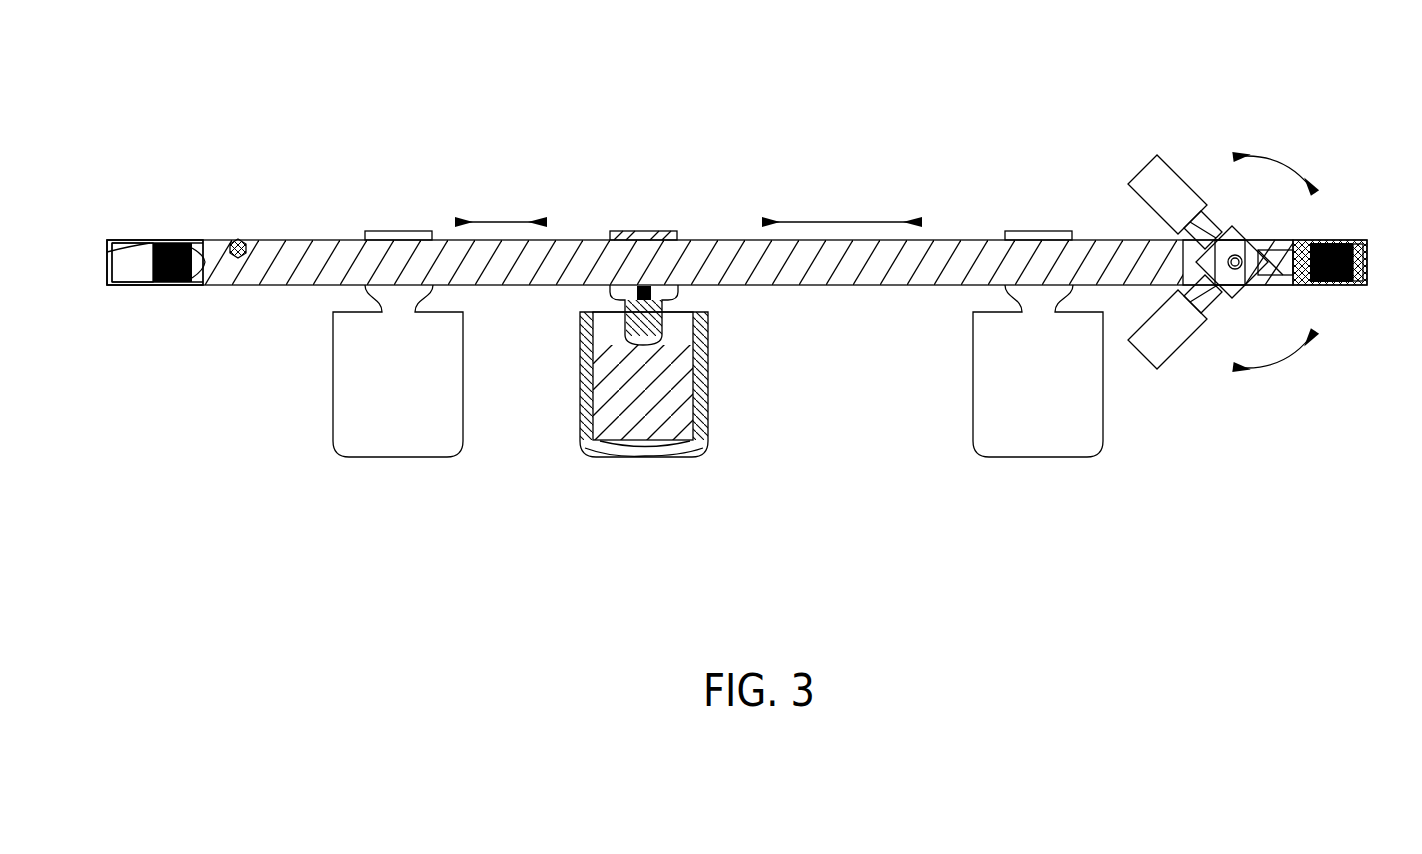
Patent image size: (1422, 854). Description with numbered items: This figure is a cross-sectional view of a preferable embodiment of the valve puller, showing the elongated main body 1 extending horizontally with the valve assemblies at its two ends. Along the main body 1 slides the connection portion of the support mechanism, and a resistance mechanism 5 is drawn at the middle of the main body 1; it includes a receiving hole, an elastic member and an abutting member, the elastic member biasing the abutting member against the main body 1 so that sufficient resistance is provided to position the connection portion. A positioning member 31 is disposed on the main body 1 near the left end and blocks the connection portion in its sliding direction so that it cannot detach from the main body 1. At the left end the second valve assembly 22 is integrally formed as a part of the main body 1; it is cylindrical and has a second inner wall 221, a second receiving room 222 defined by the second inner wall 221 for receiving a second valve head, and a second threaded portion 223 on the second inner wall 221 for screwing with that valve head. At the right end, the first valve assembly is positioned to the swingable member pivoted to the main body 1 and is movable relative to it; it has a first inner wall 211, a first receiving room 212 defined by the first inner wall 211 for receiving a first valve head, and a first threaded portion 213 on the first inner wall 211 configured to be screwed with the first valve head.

The main body 1 is at (729, 240).
The resistance mechanism 5 is at (605, 208).
The second valve assembly 22 is at (165, 210).
The positioning member 31 is at (238, 239).
The second inner wall 221 is at (108, 252).
The second receiving room 222 is at (128, 272).
The second threaded portion 223 is at (176, 283).
The first inner wall 211 is at (1367, 245).
The first receiving room 212 is at (1360, 274).
The first threaded portion 213 is at (1330, 240).